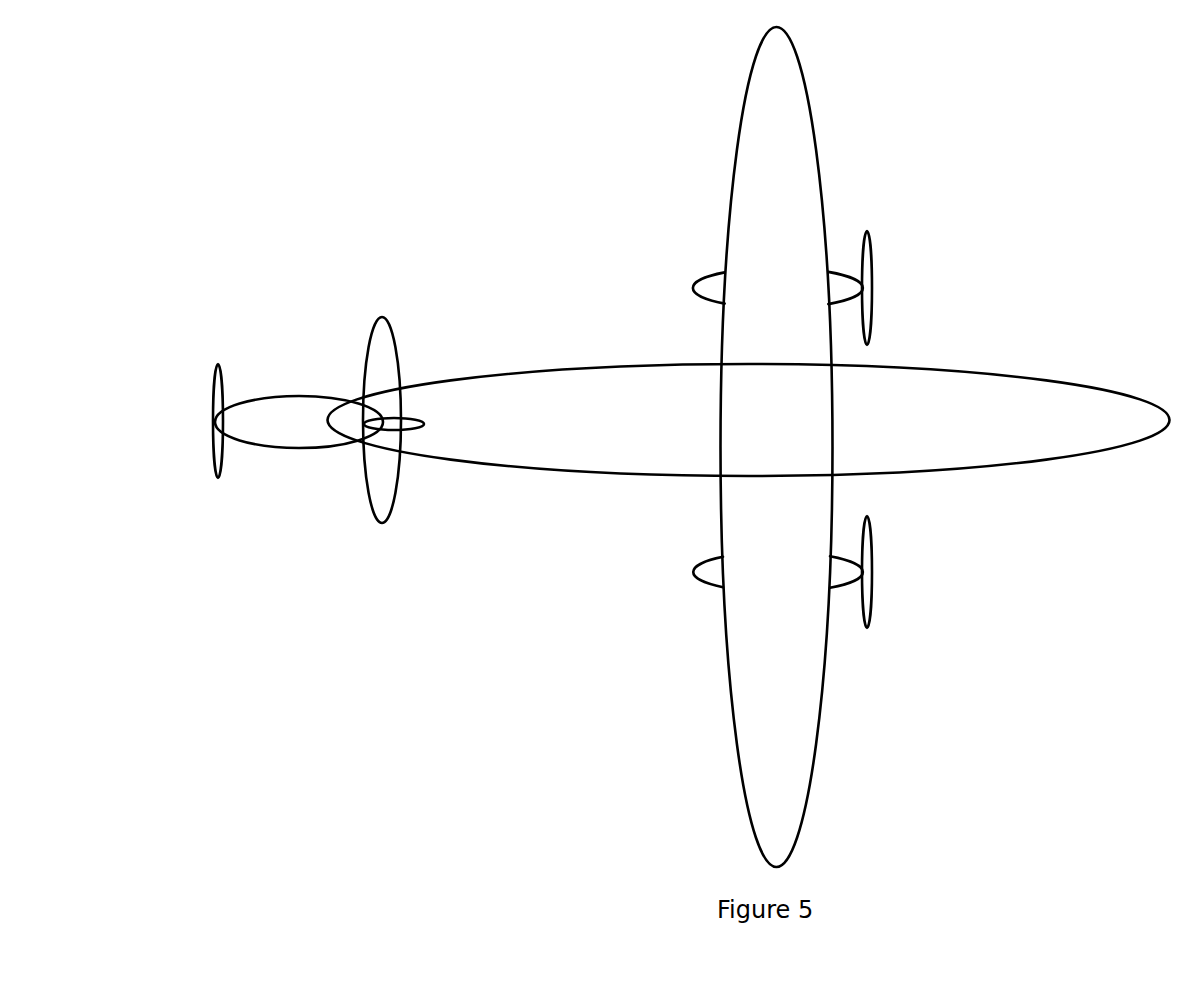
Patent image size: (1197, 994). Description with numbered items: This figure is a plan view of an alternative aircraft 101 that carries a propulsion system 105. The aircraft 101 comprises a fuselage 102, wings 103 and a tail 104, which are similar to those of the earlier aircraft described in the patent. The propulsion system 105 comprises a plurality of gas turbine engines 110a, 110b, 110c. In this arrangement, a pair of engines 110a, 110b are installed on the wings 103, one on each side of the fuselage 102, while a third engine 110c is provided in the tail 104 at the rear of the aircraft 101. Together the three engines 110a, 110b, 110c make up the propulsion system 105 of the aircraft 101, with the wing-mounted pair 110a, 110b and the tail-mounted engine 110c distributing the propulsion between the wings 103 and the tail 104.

The aircraft 101 is at (1045, 206).
The fuselage 102 is at (553, 368).
The wings 103 is at (720, 550).
The tail 104 is at (370, 493).
The propulsion system 105 is at (662, 86).
The gas turbine engine 110a is at (721, 272).
The gas turbine engine 110b is at (833, 592).
The gas turbine engine 110c is at (273, 396).